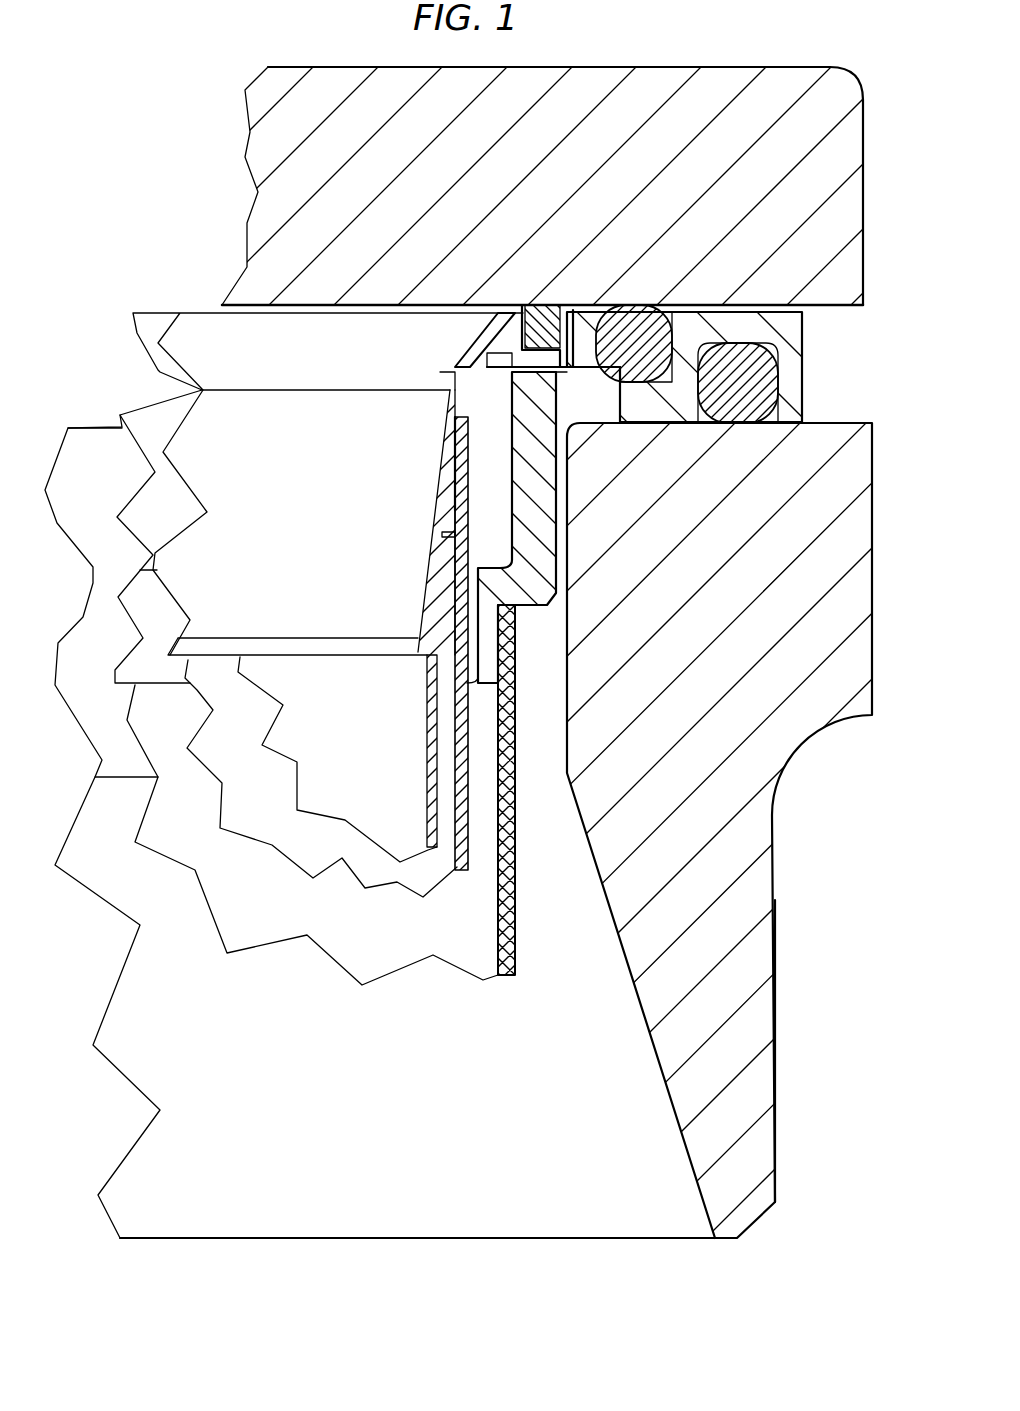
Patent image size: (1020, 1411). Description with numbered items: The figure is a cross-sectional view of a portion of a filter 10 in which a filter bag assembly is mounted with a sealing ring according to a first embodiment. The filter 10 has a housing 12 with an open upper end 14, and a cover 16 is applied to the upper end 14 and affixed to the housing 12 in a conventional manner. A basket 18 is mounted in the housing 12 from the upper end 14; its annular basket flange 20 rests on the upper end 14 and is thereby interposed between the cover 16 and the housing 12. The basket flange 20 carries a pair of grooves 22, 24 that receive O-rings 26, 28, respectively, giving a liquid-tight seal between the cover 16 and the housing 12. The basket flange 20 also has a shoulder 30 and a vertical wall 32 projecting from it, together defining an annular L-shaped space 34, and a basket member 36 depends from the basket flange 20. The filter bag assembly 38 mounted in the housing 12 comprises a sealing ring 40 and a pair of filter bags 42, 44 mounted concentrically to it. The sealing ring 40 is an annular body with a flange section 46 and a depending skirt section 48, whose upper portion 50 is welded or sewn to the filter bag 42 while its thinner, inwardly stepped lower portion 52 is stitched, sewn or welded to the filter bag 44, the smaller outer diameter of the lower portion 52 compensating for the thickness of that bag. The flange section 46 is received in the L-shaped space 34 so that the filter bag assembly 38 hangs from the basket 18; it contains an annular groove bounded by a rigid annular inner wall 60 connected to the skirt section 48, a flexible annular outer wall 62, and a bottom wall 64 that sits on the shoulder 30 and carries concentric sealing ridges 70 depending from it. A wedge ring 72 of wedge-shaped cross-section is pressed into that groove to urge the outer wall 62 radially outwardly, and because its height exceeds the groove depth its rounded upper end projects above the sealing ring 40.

The filter 10 is at (172, 178).
The housing 12 is at (789, 1008).
The open upper end 14 is at (837, 498).
The cover 16 is at (833, 165).
The basket 18 is at (523, 636).
The basket flange 20 is at (814, 380).
The groove 22 is at (603, 380).
The groove 24 is at (806, 346).
The O-ring 26 is at (635, 298).
The O-ring 28 is at (785, 416).
The shoulder 30 is at (550, 395).
The vertical wall 32 is at (588, 303).
The annular L-shaped space 34 is at (575, 375).
The basket member 36 is at (513, 935).
The filter bag assembly 38 is at (483, 730).
The sealing ring 40 is at (204, 294).
The filter bag 42 is at (467, 850).
The filter bag 44 is at (427, 757).
The flange section 46 is at (383, 330).
The skirt section 48 is at (202, 430).
The upper portion 50 is at (437, 517).
The lower portion 52 is at (440, 580).
The annular inner wall 60 is at (520, 327).
The annular outer wall 62 is at (563, 303).
The bottom wall 64 is at (477, 345).
The sealing ridges 70 is at (495, 380).
The wedge ring 72 is at (547, 303).